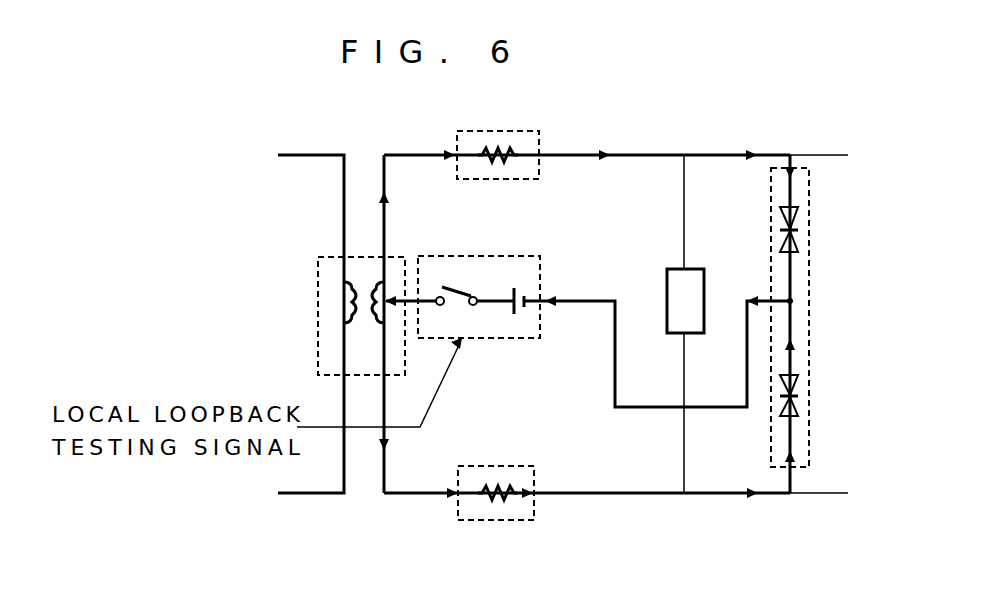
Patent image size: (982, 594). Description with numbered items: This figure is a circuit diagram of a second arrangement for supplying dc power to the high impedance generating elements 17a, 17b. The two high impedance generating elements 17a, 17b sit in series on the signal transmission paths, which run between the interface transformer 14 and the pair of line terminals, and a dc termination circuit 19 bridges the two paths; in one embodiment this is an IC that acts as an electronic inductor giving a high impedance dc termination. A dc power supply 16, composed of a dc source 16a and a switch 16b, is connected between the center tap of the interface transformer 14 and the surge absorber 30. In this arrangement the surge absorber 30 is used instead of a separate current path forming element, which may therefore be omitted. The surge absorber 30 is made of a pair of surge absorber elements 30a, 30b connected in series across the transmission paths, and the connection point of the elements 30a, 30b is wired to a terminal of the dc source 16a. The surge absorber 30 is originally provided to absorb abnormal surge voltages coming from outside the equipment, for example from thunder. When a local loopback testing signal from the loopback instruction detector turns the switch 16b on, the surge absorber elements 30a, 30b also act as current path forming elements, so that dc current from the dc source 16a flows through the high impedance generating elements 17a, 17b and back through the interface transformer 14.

The interface transformer 14 is at (322, 256).
The dc power supply 16 is at (486, 297).
The dc source 16a is at (525, 313).
The switch 16b is at (460, 308).
The high impedance generating element 17a is at (498, 130).
The high impedance generating element 17b is at (483, 522).
The dc termination circuit 19 is at (673, 268).
The surge absorber 30 is at (796, 317).
The surge absorber element 30a is at (777, 228).
The surge absorber element 30b is at (800, 391).